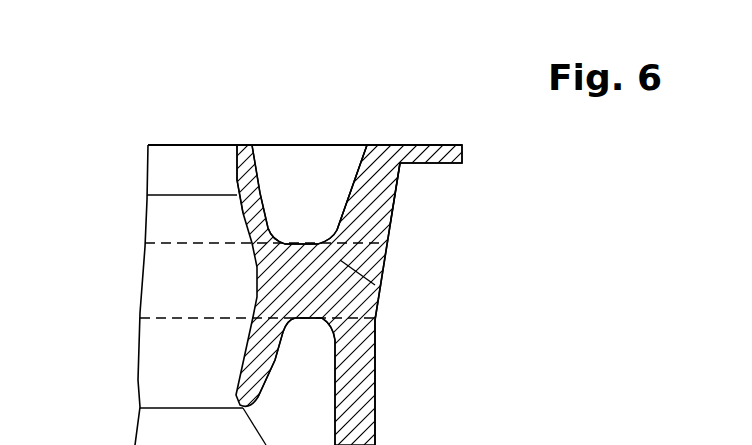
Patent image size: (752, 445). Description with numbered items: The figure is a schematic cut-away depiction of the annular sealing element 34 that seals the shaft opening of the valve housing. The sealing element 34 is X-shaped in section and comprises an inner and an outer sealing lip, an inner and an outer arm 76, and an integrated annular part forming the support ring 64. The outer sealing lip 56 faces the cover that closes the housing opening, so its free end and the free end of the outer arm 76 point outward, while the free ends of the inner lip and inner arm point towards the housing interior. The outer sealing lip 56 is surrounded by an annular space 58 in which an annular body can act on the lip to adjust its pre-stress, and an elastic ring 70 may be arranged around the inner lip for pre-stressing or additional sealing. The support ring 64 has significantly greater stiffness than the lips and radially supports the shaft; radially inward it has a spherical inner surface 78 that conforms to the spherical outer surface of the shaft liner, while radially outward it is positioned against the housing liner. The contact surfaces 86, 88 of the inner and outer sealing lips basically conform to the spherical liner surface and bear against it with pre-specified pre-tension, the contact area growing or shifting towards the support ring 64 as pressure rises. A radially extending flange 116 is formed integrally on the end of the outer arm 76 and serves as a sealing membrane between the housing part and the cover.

The sealing element 34 is at (378, 332).
The outer sealing lip 56 is at (242, 147).
The annular space 58 is at (279, 177).
The support ring 64 is at (375, 284).
The elastic ring 70 is at (298, 401).
The outer arm 76 is at (367, 195).
The spherical inner surface 78 is at (177, 290).
The contact surface 86 is at (172, 362).
The contact surface 88 is at (147, 227).
The flange 116 is at (443, 147).